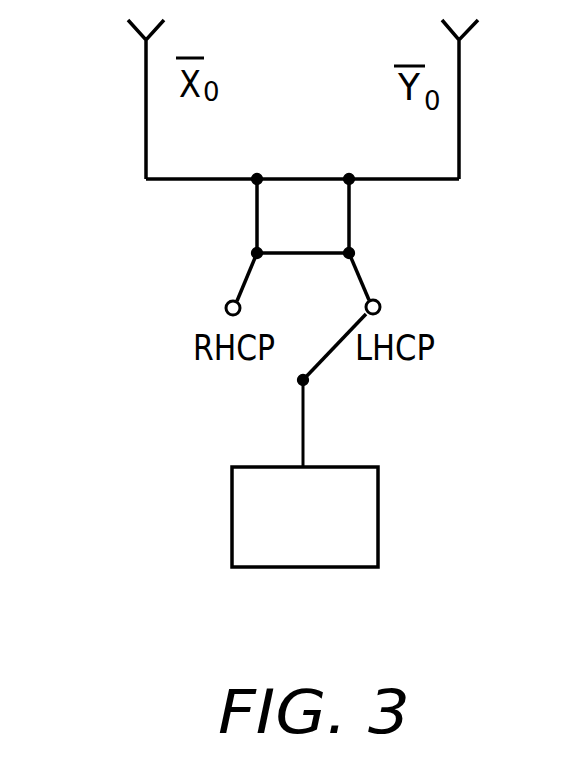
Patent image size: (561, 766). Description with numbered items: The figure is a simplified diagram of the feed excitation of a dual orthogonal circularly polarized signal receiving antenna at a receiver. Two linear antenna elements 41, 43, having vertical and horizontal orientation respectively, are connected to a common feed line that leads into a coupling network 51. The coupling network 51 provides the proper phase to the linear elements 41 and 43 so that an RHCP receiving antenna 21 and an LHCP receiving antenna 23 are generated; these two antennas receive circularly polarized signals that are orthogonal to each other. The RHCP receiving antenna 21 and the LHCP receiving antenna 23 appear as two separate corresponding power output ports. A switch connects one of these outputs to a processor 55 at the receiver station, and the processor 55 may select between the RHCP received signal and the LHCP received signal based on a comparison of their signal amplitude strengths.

The linear antenna element 41 is at (146, 100).
The linear antenna element 43 is at (459, 90).
The coupling network 51 is at (356, 215).
The RHCP receiving antenna 21 is at (226, 305).
The LHCP receiving antenna 23 is at (380, 300).
The processor 55 is at (322, 536).